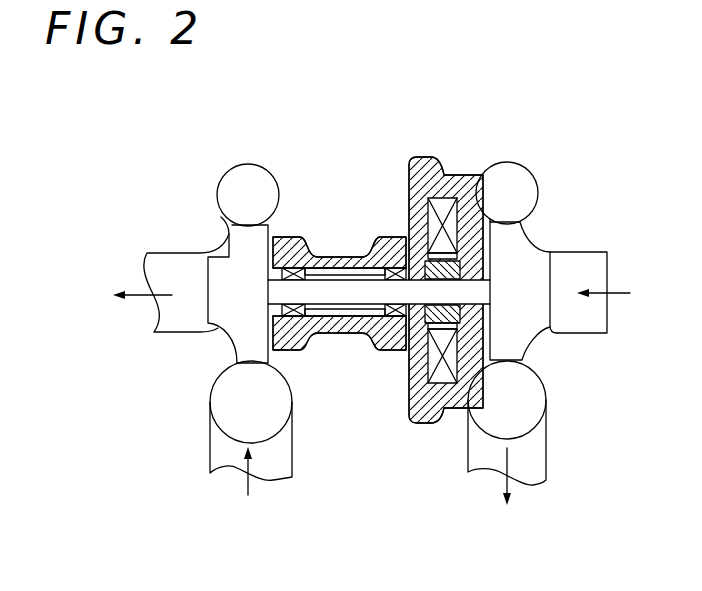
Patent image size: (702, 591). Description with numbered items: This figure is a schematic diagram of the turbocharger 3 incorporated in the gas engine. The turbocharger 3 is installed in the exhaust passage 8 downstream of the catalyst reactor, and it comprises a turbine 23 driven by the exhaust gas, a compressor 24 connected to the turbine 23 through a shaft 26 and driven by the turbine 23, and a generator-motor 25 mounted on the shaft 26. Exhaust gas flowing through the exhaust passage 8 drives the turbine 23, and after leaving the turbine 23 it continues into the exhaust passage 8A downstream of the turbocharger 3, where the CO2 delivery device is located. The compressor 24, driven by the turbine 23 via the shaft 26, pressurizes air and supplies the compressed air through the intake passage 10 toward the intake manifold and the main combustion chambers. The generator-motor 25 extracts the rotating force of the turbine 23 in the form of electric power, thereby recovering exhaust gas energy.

The turbocharger 3 is at (345, 212).
The exhaust passage 8 is at (230, 447).
The exhaust passage 8A is at (183, 312).
The intake passage 10 is at (533, 457).
The turbine 23 is at (230, 265).
The compressor 24 is at (522, 265).
The generator-motor 25 is at (445, 208).
The shaft 26 is at (353, 297).